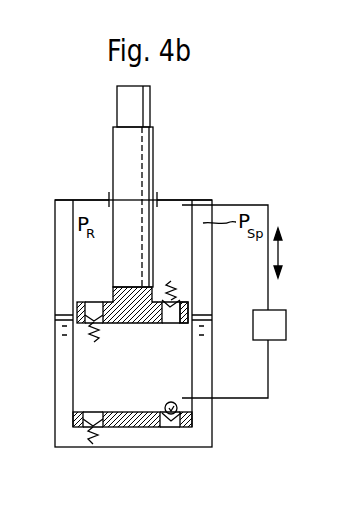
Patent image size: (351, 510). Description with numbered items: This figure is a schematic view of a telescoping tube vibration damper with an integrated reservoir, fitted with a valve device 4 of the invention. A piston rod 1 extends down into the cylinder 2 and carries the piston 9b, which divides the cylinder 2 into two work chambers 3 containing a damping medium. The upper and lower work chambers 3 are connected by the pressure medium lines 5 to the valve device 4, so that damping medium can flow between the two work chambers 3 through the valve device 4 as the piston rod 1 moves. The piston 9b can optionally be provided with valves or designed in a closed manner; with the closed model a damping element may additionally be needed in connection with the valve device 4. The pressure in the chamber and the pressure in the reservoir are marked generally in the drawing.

The piston rod 1 is at (120, 157).
The cylinder 2 is at (193, 281).
The work chambers 3 is at (83, 258).
The valve device 4 is at (280, 327).
The pressure medium lines 5 is at (228, 204).
The piston 9b is at (192, 311).